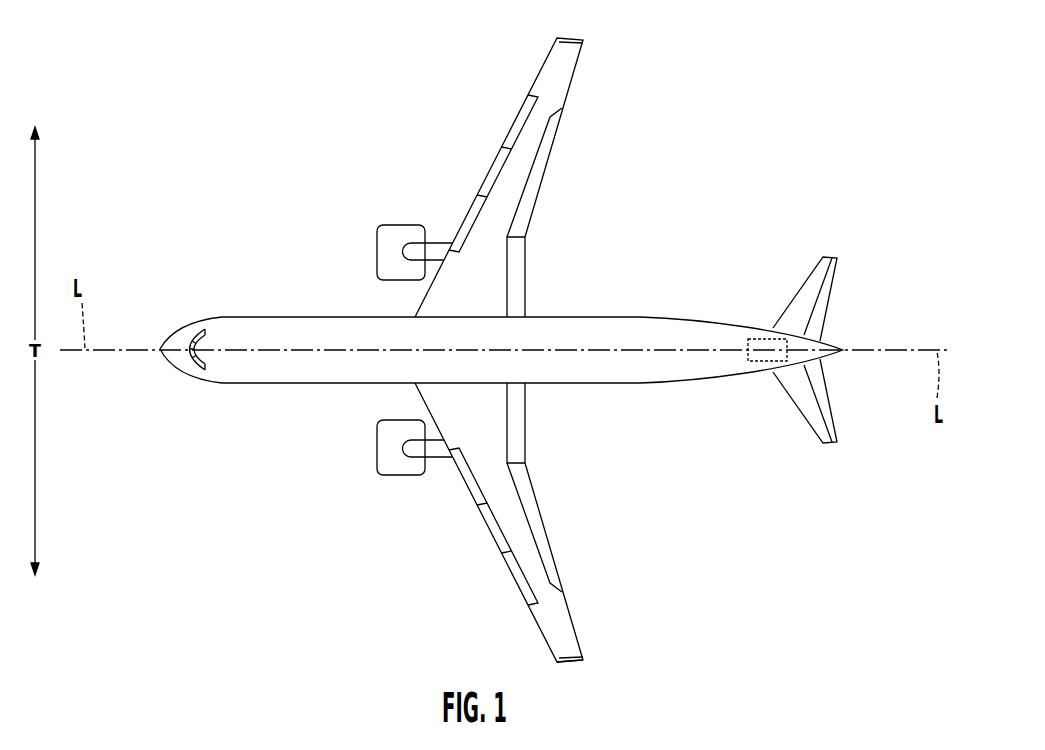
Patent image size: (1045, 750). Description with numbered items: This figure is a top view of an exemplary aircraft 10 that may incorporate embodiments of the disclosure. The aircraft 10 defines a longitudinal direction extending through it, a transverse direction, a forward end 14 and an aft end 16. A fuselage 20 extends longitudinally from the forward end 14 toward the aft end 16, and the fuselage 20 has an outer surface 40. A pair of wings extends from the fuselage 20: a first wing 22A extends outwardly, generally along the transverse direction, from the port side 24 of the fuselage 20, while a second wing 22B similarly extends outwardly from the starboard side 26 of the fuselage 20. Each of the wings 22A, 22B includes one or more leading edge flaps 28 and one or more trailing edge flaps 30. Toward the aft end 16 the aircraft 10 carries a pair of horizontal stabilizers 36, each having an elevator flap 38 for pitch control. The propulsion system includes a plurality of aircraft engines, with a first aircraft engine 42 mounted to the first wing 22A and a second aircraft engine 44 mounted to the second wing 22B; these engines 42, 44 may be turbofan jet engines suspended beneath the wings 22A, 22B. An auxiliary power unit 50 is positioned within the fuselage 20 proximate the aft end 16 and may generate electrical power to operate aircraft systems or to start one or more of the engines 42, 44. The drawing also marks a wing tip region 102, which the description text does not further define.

The aircraft 10 is at (698, 135).
The forward end 14 is at (160, 371).
The aft end 16 is at (855, 384).
The fuselage 20 is at (215, 367).
The first wing 22A is at (530, 567).
The second wing 22B is at (510, 190).
The port side 24 is at (290, 392).
The starboard side 26 is at (295, 308).
The leading edge flaps 28 is at (493, 528).
The trailing edge flaps 30 is at (547, 533).
The horizontal stabilizers 36 is at (813, 278).
The elevator flap 38 is at (830, 278).
The outer surface 40 is at (650, 372).
The first aircraft engine 42 is at (393, 479).
The second aircraft engine 44 is at (391, 223).
The auxiliary power unit 50 is at (758, 362).
The wing tip 102 is at (575, 688).